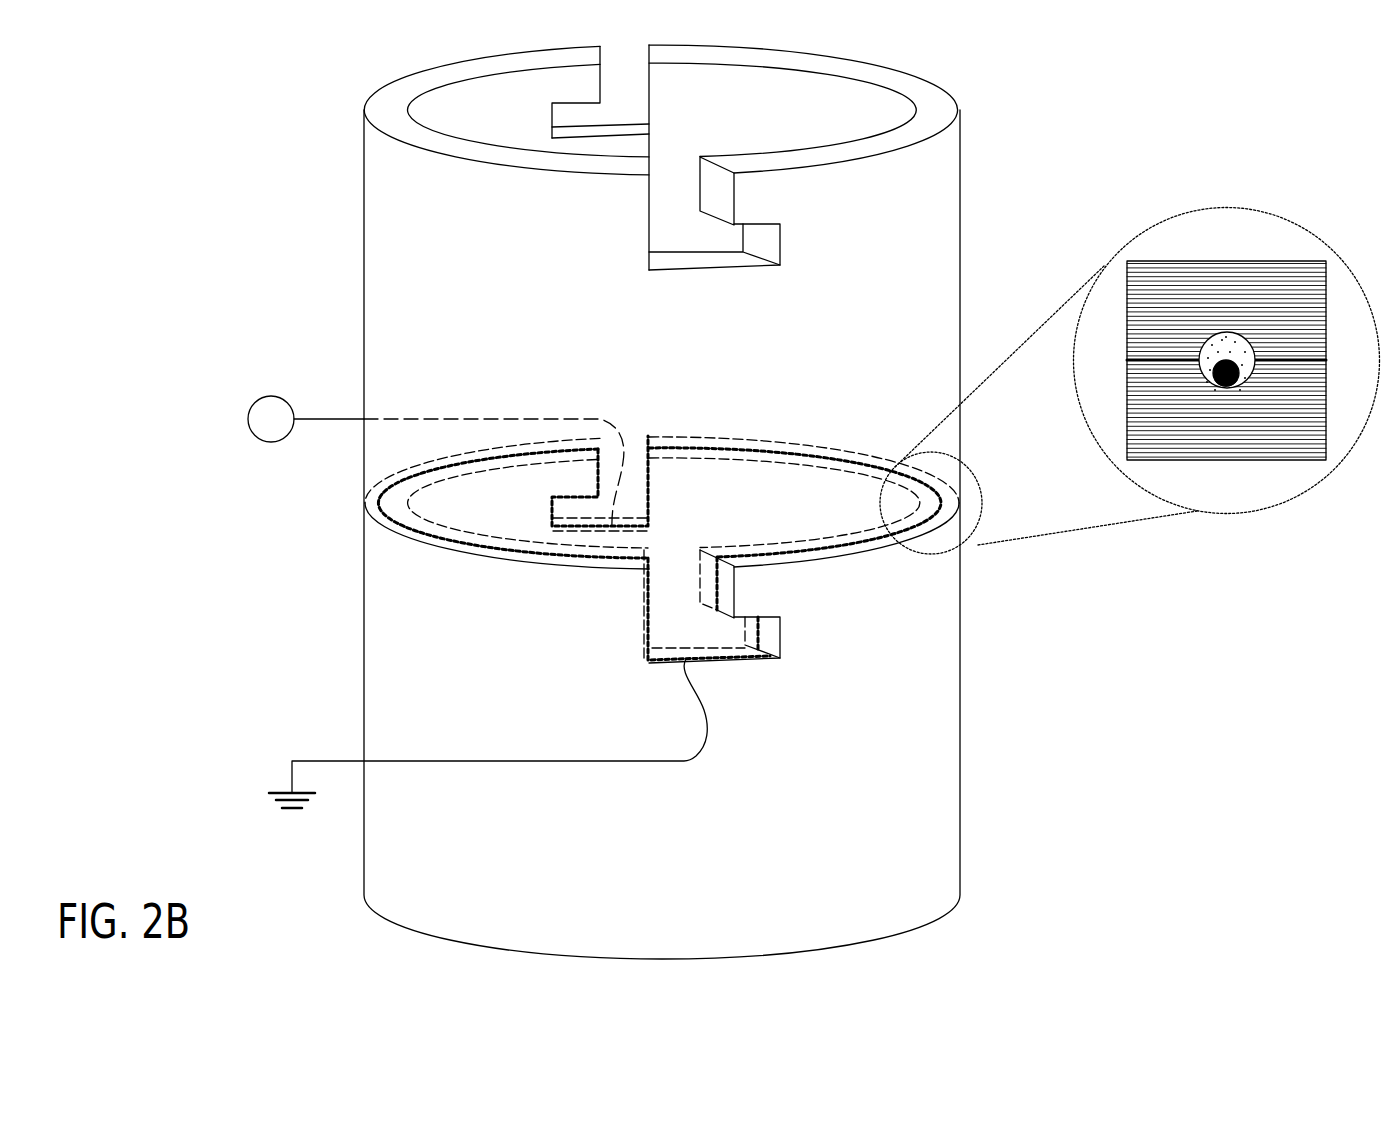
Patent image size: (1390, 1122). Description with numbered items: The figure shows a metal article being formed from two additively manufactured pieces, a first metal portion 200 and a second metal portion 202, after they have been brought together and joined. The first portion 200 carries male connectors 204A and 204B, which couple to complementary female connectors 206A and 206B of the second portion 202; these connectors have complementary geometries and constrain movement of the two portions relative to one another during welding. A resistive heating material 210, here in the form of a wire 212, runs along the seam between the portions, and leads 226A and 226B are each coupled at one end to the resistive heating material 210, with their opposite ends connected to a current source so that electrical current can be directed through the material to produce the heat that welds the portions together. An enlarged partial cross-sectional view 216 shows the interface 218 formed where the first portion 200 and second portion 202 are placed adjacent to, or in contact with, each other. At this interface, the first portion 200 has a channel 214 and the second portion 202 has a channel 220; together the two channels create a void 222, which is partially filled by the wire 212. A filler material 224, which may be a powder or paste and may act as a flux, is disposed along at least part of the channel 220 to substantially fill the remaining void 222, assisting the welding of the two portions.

The first metal portion 200 is at (688, 502).
The second metal portion 202 is at (962, 705).
The male connector 204A is at (665, 617).
The male connector 204B is at (636, 478).
The female connector 206A is at (746, 678).
The female connector 206B is at (645, 428).
The resistive heating material 210 is at (662, 553).
The wire 212 is at (1245, 381).
The channel 214 is at (1230, 408).
The partial cross-sectional view 216 is at (1130, 348).
The interface 218 is at (1114, 361).
The channel 220 is at (1283, 362).
The void 222 is at (1201, 320).
The filler material 224 is at (1243, 348).
The lead 226A is at (710, 733).
The lead 226B is at (603, 420).